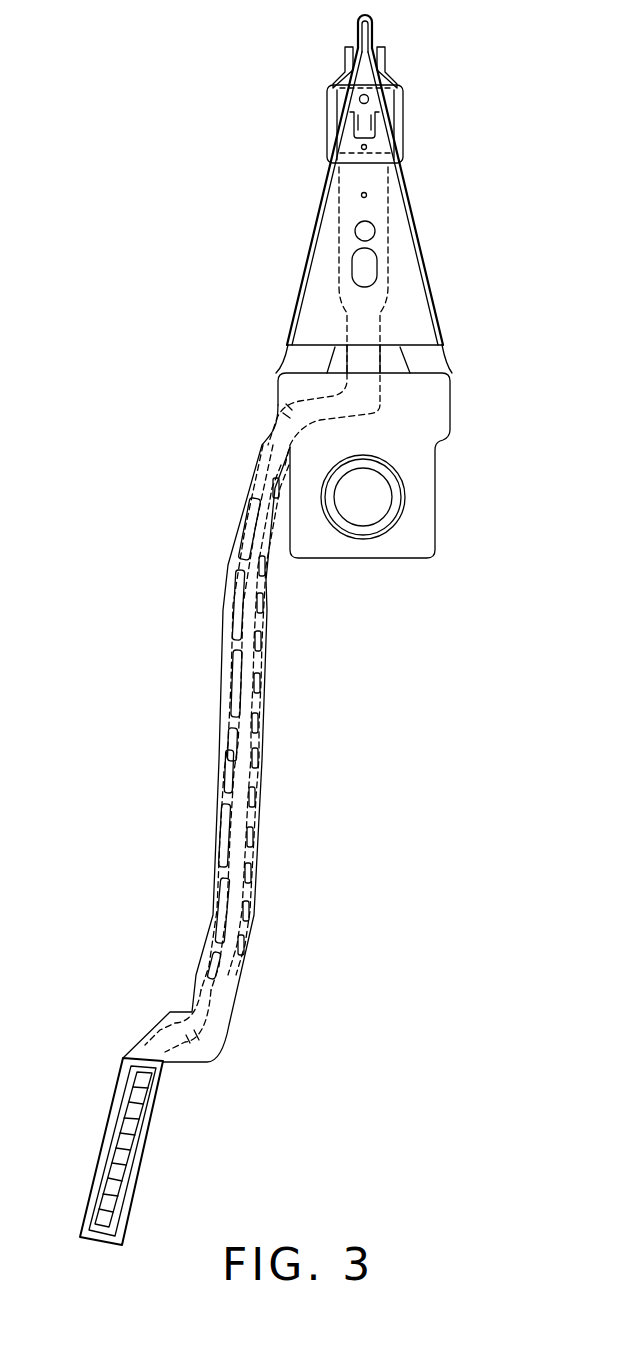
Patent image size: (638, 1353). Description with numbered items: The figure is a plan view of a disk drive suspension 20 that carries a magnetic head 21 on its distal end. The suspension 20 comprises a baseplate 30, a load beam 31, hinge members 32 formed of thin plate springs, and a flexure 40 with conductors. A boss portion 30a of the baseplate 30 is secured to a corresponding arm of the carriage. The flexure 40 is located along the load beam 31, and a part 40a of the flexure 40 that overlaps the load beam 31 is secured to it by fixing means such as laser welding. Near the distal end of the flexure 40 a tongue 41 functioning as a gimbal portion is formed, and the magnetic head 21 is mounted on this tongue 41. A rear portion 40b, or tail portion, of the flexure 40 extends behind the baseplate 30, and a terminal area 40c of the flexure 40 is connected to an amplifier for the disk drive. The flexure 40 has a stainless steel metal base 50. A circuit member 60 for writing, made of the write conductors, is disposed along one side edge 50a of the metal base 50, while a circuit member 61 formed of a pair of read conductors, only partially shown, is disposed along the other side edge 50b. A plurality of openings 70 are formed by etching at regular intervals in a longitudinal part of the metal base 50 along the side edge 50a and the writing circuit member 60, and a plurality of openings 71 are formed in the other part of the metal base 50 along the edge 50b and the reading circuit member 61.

The suspension 20 is at (232, 202).
The magnetic head 21 is at (382, 106).
The baseplate 30 is at (400, 465).
The boss portion 30a is at (395, 512).
The load beam 31 is at (410, 281).
The hinge members 32 is at (445, 360).
The flexure 40 is at (357, 316).
The part of the flexure overlapping the load beam 40a is at (342, 289).
The rear portion 40b is at (212, 900).
The terminal area 40c is at (120, 1148).
The tongue 41 is at (370, 133).
The metal base 50 is at (239, 733).
The one side edge 50a is at (223, 641).
The other side edge 50b is at (267, 641).
The circuit member for writing 60 is at (222, 720).
The circuit member for reading 61 is at (250, 740).
The openings 70 is at (243, 545).
The openings 71 is at (253, 833).